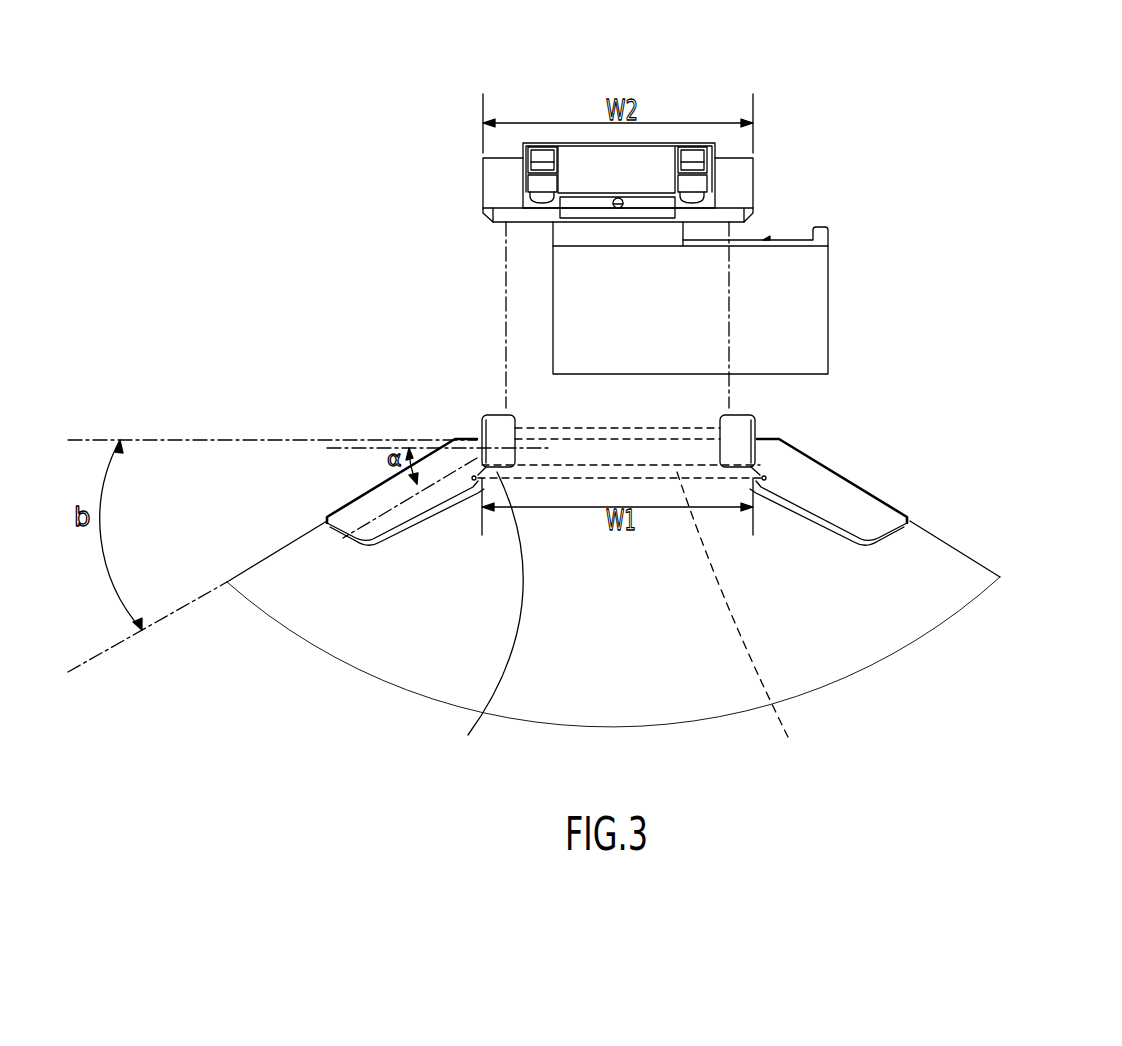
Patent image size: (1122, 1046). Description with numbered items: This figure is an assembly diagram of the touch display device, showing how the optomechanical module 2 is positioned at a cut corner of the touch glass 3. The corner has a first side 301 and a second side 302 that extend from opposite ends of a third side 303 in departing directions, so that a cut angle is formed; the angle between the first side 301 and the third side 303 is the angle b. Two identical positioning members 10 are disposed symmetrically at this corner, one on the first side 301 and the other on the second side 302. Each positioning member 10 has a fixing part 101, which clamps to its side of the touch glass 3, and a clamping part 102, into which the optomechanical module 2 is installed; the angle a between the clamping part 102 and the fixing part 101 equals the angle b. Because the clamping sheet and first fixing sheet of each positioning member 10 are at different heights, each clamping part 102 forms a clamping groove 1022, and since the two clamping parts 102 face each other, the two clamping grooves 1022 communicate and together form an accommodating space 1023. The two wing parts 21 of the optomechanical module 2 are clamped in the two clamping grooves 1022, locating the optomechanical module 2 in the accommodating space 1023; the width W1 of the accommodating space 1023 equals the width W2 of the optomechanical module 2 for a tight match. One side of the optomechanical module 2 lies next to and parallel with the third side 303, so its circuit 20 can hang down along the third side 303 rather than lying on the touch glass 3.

The optomechanical module 2 is at (580, 164).
The wing part 21 is at (493, 173).
The circuit 20 is at (763, 240).
The clamping part 102 is at (477, 430).
The third side 303 is at (620, 437).
The positioning member 10 is at (663, 550).
The fixing part 101 is at (370, 527).
The first side 301 is at (278, 548).
The second side 302 is at (953, 547).
The touch glass 3 is at (631, 629).
The clamping groove 1022 is at (485, 622).
The accommodating space 1023 is at (746, 622).